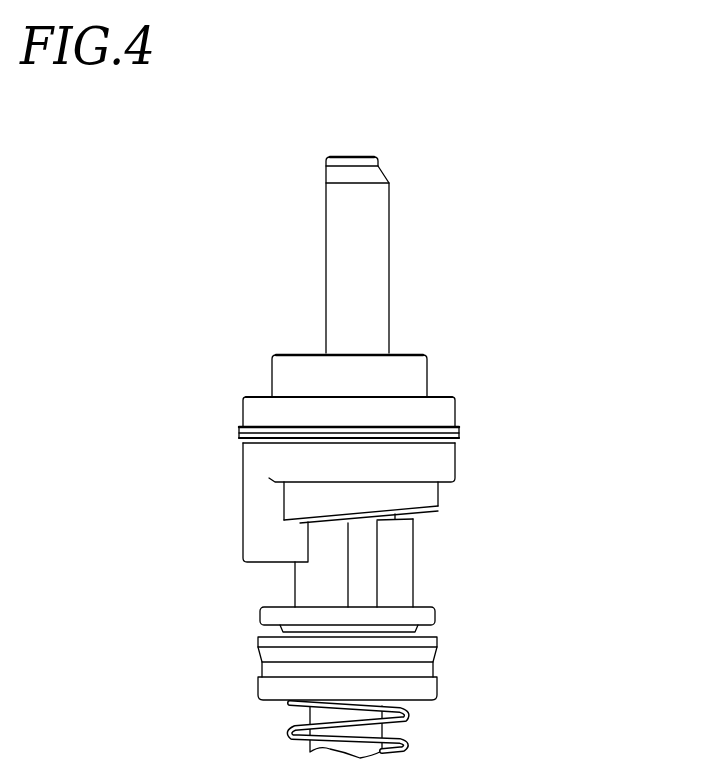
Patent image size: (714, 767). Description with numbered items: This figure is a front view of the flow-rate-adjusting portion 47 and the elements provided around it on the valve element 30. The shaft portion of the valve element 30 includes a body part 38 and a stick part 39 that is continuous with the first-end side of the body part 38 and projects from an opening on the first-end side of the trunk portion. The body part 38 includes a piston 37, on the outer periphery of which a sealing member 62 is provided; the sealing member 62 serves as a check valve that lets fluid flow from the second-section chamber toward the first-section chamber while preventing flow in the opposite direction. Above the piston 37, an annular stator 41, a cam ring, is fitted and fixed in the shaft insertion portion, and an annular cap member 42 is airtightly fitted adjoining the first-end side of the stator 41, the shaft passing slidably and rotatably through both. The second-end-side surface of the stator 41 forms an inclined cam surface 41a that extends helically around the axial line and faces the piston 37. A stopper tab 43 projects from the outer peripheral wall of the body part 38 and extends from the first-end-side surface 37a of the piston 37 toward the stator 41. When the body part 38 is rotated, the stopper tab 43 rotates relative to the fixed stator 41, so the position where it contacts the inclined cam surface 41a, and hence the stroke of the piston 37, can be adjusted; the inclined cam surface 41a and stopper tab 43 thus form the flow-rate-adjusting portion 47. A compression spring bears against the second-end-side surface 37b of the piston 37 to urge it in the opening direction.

The valve element 30 is at (482, 192).
The stick part 39 is at (334, 256).
The cap member 42 is at (447, 419).
The stator 41 is at (447, 471).
The inclined cam surface 41a is at (425, 510).
The stopper tab 43 is at (400, 553).
The flow-rate-adjusting portion 47 is at (545, 495).
The body part 38 is at (322, 578).
The first-end-side surface 37a is at (425, 602).
The piston 37 is at (442, 668).
The sealing member 62 is at (275, 667).
The second-end-side surface 37b is at (430, 702).